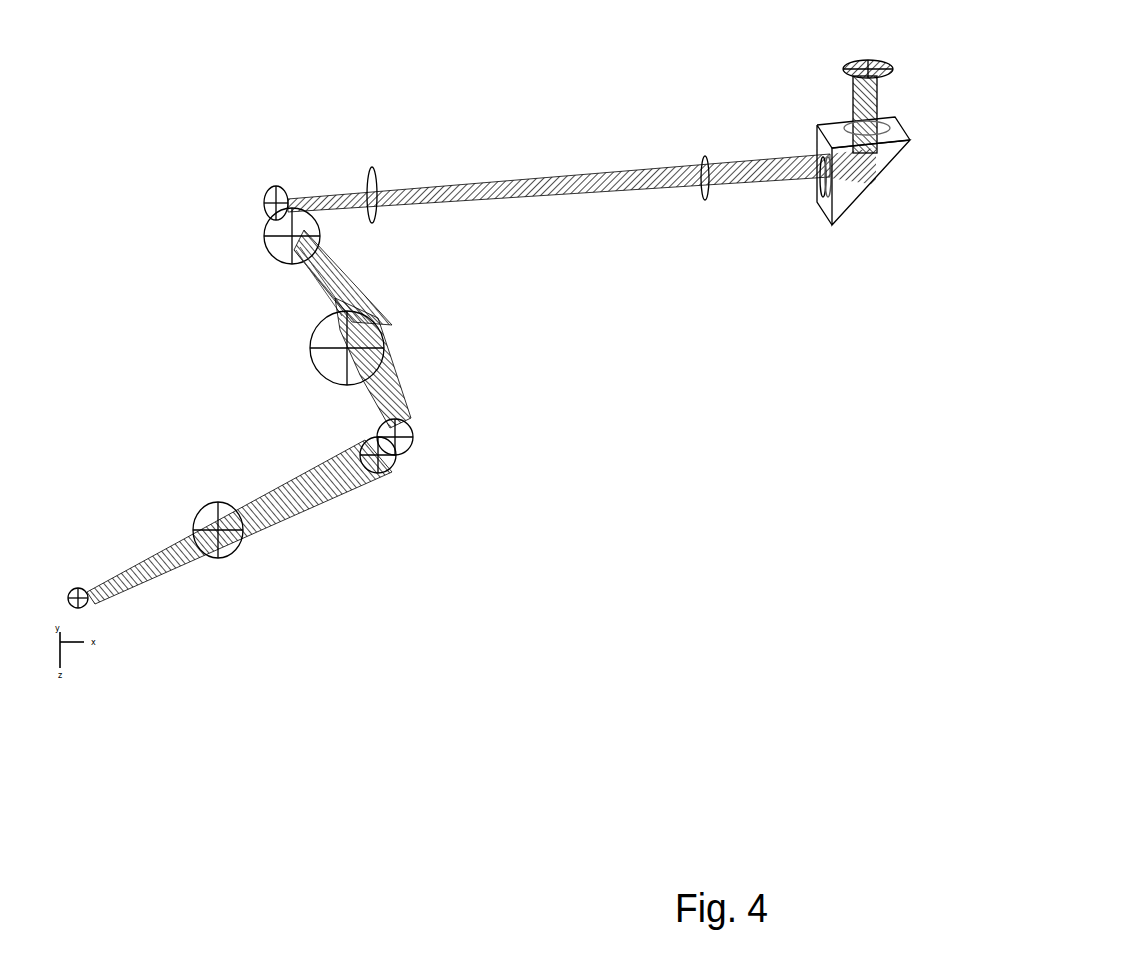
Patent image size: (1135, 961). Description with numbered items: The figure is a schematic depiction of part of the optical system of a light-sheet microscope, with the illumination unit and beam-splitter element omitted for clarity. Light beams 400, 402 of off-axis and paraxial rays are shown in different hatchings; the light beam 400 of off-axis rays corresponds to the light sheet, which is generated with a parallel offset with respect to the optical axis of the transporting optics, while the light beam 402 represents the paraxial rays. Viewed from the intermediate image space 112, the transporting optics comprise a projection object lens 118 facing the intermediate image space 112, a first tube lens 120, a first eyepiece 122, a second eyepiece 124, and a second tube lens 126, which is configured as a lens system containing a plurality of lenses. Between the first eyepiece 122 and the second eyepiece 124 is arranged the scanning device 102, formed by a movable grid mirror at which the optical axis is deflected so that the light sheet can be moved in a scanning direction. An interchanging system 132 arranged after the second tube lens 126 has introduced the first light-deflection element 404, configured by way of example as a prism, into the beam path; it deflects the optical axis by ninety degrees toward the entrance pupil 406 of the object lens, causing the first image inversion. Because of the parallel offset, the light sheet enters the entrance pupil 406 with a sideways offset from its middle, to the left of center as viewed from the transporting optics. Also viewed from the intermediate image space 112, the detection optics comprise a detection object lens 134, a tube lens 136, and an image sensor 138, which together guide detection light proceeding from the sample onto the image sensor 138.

The scanning device 102 is at (279, 186).
The intermediate image space 112 is at (422, 460).
The projection object lens 118 is at (416, 428).
The first tube lens 120 is at (386, 328).
The first eyepiece 122 is at (268, 255).
The second eyepiece 124 is at (373, 170).
The second tube lens 126 is at (708, 200).
The interchanging system 132 is at (819, 119).
The detection object lens 134 is at (390, 477).
The tube lens 136 is at (245, 553).
The image sensor 138 is at (90, 607).
The light beam of off-axis rays 400 is at (348, 290).
The light beam of paraxial rays 402 is at (330, 310).
The first light-deflection element 404 is at (848, 222).
The entrance pupil 406 is at (853, 60).